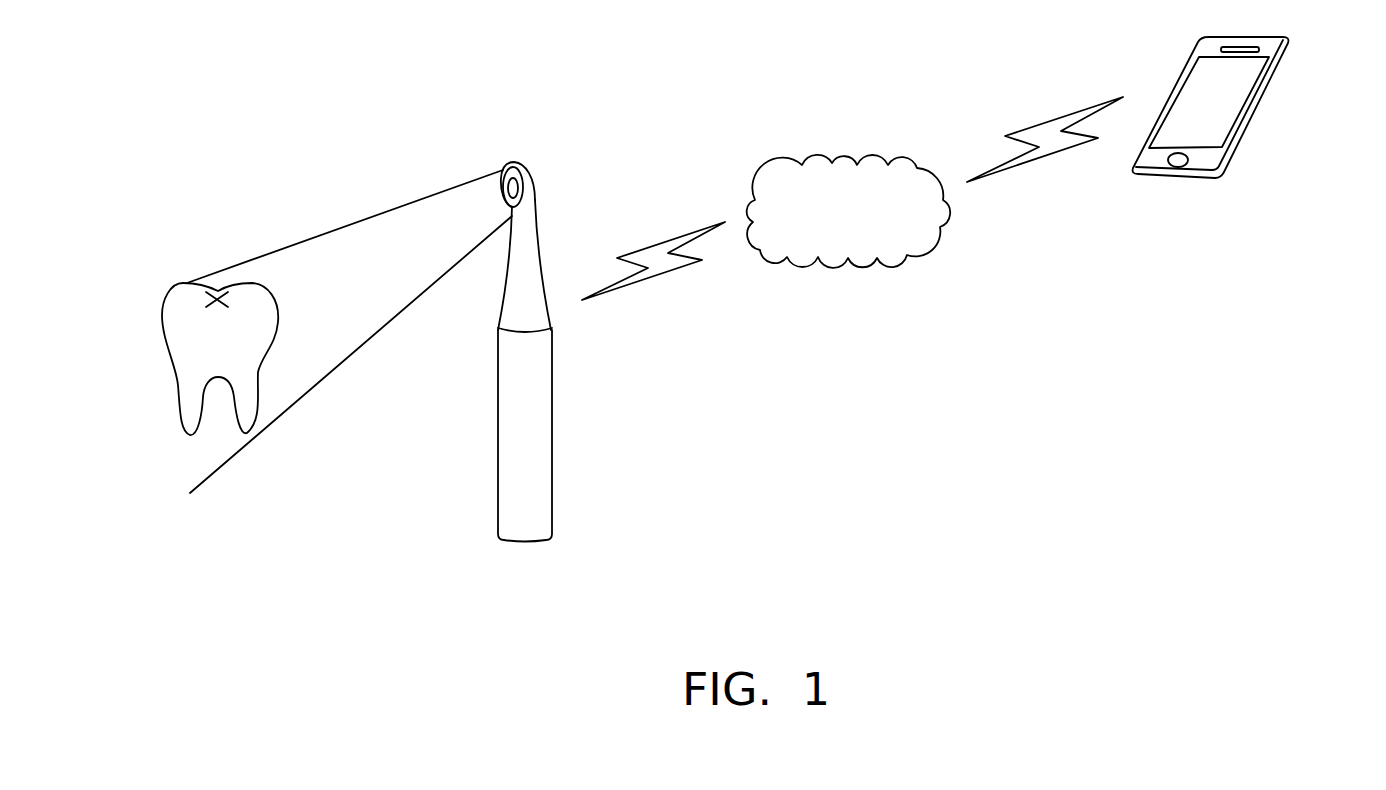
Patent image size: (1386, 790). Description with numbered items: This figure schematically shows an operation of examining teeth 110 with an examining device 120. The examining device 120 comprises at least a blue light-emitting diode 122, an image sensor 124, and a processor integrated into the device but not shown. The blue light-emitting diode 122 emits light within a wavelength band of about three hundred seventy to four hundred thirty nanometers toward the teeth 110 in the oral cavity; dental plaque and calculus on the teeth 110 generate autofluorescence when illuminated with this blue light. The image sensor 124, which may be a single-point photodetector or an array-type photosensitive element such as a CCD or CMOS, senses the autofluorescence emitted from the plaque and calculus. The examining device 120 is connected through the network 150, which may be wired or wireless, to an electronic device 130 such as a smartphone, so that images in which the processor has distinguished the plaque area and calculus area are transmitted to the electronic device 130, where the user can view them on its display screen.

The teeth 110 is at (278, 303).
The examining device 120 is at (552, 380).
The blue light-emitting diode 122 is at (503, 169).
The image sensor 124 is at (512, 188).
The network 150 is at (847, 157).
The electronic device 130 is at (1258, 107).